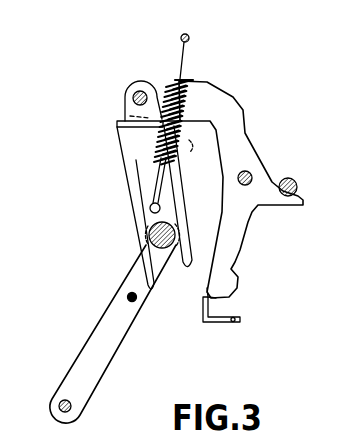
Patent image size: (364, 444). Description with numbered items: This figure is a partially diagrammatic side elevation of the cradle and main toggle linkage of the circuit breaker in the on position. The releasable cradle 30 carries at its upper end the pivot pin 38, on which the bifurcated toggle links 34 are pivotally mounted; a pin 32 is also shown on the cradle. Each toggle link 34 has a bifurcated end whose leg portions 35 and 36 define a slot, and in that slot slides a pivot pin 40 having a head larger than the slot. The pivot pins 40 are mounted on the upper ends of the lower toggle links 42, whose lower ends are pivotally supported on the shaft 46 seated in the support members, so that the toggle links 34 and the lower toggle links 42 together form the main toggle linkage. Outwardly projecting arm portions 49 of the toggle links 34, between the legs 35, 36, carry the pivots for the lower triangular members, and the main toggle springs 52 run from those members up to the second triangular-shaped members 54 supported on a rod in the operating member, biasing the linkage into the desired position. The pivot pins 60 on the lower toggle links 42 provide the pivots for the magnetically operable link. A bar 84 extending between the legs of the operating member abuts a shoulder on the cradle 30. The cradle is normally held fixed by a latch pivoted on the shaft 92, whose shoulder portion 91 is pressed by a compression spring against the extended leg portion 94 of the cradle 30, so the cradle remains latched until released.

The releasable cradle 30 is at (234, 98).
The pivot pin 32 is at (252, 170).
The toggle links 34 is at (117, 136).
The leg portion 35 is at (143, 278).
The leg portion 36 is at (189, 261).
The pivot pin 38 is at (133, 97).
The pivot pins 40 is at (150, 240).
The lower toggle links 42 is at (79, 342).
The shaft 46 is at (57, 405).
The arm portions 49 is at (145, 192).
The main toggle springs 52 is at (148, 151).
The triangular-shaped members 54 is at (190, 37).
The pivot pins 60 is at (134, 301).
The bar 84 is at (296, 180).
The shoulder portion 91 is at (203, 314).
The shaft 92 is at (240, 318).
The extended leg portion 94 is at (205, 292).